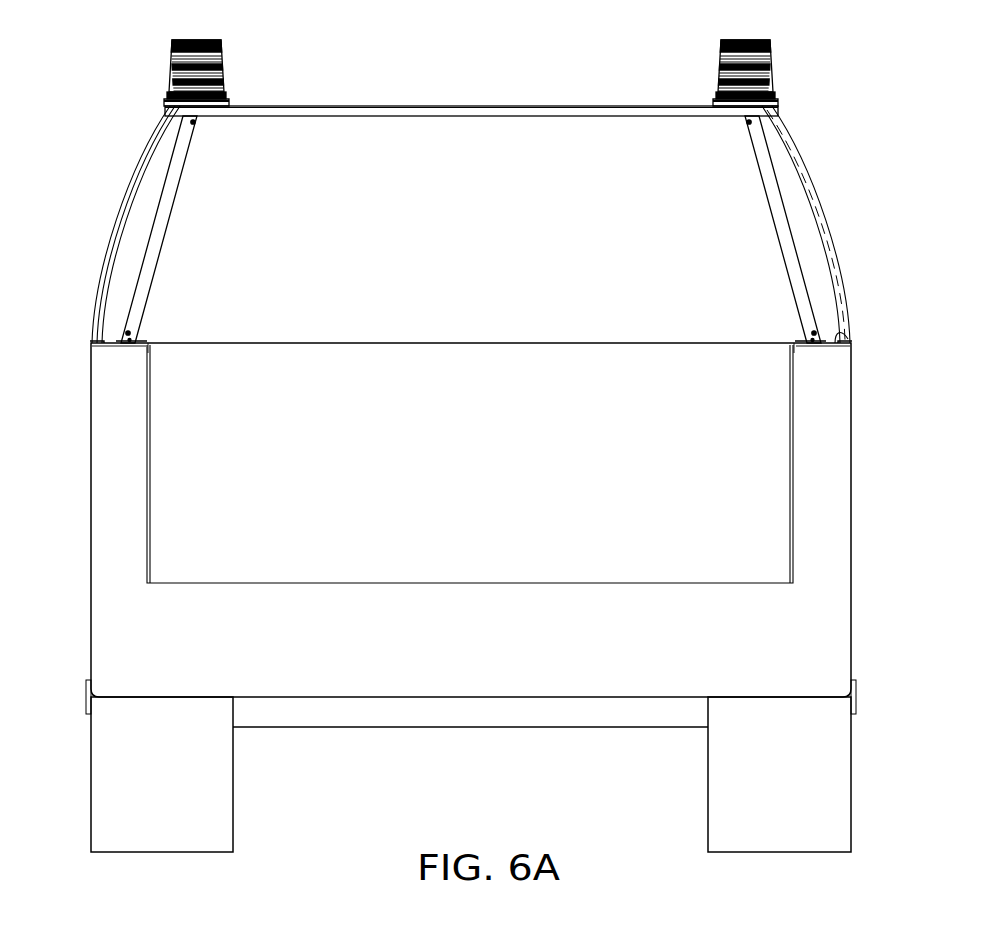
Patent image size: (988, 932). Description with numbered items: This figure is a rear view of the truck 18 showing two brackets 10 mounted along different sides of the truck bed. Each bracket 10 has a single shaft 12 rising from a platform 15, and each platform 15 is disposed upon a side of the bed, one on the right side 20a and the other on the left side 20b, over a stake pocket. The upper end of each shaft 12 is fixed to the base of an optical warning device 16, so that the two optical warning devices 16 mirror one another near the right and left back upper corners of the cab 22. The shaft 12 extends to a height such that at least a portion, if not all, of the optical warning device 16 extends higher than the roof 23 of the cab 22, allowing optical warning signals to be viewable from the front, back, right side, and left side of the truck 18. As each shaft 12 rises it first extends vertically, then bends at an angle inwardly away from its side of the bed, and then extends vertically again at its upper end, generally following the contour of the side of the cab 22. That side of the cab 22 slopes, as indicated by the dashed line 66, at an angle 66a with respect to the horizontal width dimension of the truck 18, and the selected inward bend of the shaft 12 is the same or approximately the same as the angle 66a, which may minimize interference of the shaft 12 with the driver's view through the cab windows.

The bracket 10 is at (460, 195).
The shaft 12 is at (153, 232).
The platform 15 is at (143, 343).
The optical warning device 16 is at (222, 40).
The truck 18 is at (91, 470).
The right side 20a is at (827, 347).
The left side 20b is at (115, 347).
The cab 22 is at (458, 106).
The roof 23 is at (338, 106).
The dashed line 66 is at (798, 182).
The angle 66a is at (838, 337).